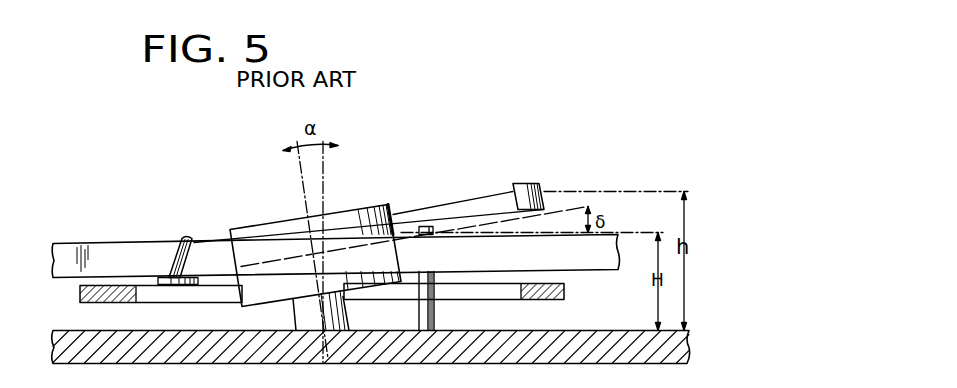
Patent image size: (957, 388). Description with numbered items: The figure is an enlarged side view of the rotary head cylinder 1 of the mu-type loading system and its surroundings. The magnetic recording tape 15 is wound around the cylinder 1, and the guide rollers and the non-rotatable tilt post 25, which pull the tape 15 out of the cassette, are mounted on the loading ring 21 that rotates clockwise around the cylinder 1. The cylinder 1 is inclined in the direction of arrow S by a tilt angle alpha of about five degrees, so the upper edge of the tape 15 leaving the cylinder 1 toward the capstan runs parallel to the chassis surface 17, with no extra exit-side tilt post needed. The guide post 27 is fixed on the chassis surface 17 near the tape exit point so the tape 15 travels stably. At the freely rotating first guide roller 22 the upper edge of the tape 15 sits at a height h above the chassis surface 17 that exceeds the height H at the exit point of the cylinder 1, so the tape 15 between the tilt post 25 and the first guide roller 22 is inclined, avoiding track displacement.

The rotary head cylinder 1 is at (360, 204).
The magnetic recording tape 15 is at (88, 248).
The chassis surface 17 is at (65, 328).
The loading ring 21 is at (565, 292).
The first guide roller 22 is at (523, 181).
The tilt post 25 is at (183, 234).
The guide post 27 is at (431, 316).